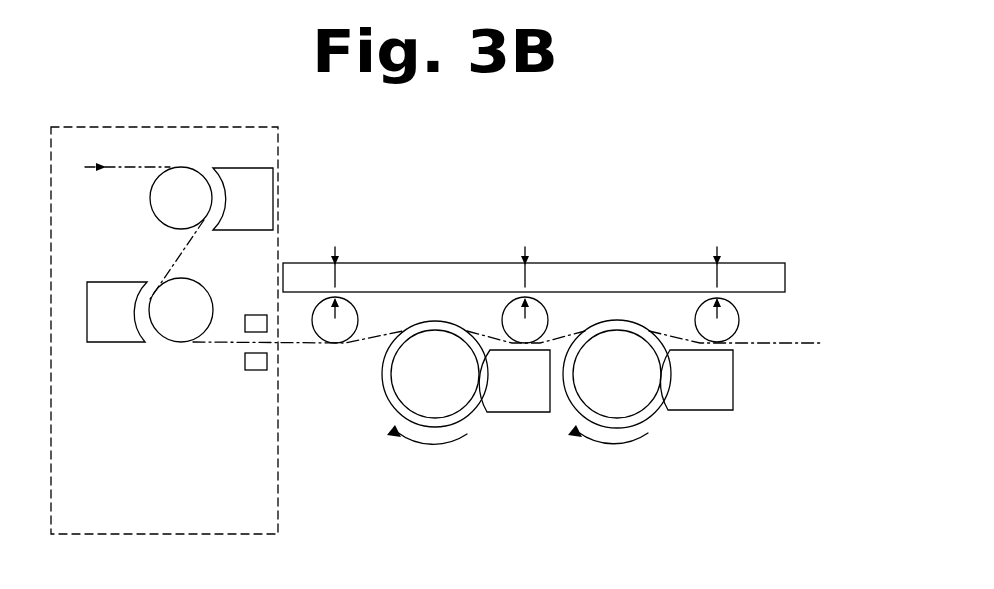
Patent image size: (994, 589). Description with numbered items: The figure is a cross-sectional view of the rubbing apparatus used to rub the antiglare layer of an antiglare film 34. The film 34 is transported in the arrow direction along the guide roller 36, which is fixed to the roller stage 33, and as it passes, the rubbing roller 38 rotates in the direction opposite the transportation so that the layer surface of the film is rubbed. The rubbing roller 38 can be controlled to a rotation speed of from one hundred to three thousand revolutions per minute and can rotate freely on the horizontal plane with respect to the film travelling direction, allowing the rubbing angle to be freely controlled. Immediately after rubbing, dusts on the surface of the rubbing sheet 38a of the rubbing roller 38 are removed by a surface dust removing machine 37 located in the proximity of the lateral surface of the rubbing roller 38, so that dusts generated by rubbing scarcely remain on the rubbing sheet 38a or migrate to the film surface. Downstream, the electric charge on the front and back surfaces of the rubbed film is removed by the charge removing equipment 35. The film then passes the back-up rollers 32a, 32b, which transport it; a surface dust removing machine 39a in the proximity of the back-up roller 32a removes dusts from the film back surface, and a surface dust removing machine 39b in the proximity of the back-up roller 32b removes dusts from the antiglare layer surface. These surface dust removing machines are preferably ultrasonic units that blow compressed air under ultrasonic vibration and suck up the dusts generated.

The back-up roller 32a is at (190, 307).
The back-up roller 32b is at (164, 203).
The roller stage 33 is at (638, 264).
The transparent resin film 34 is at (798, 345).
The charge removing equipment 35 is at (249, 371).
The guide roller 36 is at (739, 318).
The surface dust removing machine 37 is at (527, 400).
The guide roller 38 is at (442, 427).
The rubbing sheet 38a is at (392, 388).
The surface dust removing machine 39a is at (112, 343).
The back-up roller 39b is at (260, 192).